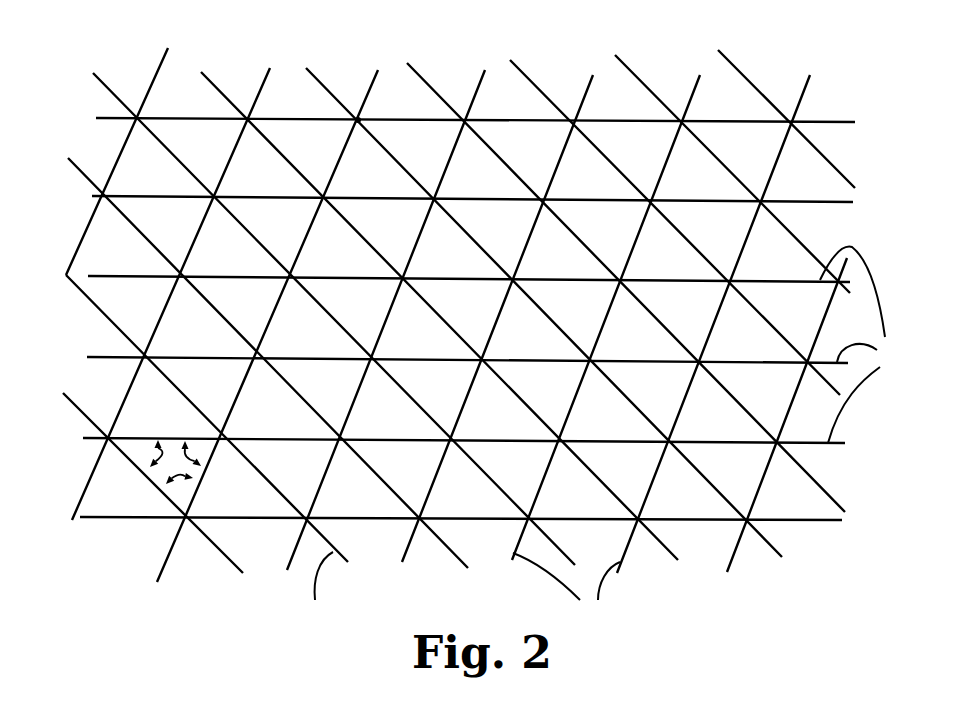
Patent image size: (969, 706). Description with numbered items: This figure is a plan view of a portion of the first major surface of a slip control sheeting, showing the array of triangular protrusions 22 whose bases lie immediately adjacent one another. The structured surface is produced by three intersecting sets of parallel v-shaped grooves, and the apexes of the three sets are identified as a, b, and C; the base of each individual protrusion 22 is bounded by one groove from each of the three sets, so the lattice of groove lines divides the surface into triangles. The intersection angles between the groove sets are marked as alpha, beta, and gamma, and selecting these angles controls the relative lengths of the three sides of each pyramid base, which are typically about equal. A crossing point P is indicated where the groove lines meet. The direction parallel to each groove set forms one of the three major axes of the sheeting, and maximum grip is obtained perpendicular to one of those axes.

The triangular protrusions 22 is at (692, 162).
The crossing point P is at (393, 133).
The intersection angle beta is at (158, 448).
The intersection angle gamma is at (188, 449).
The intersection angle alpha is at (179, 479).
The groove apex a is at (457, 555).
The groove apex b is at (727, 560).
The groove apex c C is at (861, 345).